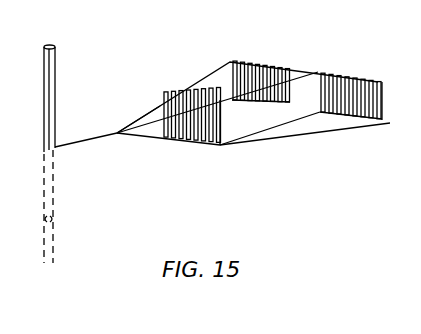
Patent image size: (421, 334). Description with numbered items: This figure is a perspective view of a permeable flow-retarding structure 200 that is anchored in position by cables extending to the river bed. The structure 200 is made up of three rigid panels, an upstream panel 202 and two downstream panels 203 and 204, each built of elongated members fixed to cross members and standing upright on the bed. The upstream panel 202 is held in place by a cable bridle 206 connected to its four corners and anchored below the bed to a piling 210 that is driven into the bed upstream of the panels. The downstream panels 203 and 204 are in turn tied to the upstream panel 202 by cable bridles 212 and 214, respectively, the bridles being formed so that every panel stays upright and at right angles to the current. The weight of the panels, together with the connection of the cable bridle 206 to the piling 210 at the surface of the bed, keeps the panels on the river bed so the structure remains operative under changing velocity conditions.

The structure 200 is at (177, 52).
The upstream panel 202 is at (135, 116).
The downstream panel 203 is at (261, 60).
The downstream panel 204 is at (358, 73).
The cable bridle 206 is at (127, 116).
The piling 210 is at (48, 46).
The cable bridle 212 is at (212, 65).
The cable bridle 214 is at (312, 133).